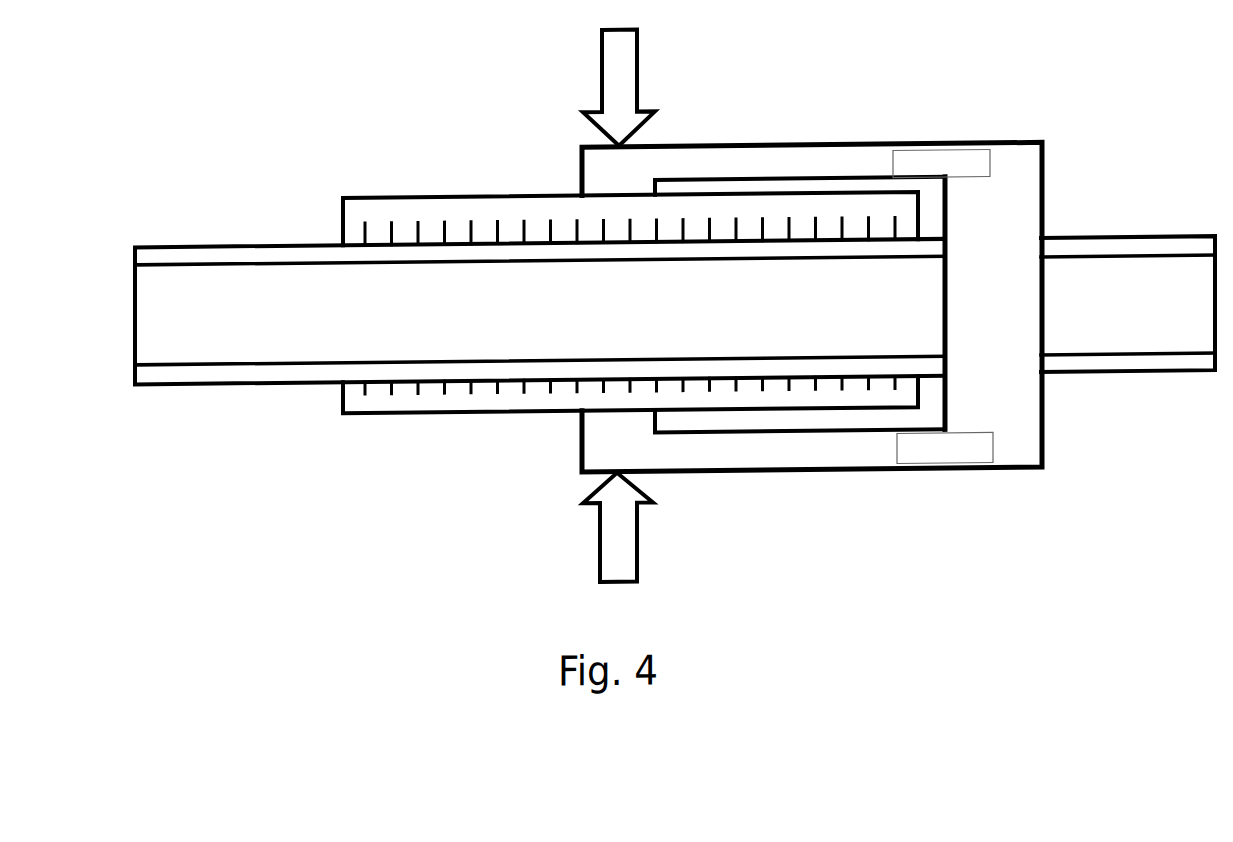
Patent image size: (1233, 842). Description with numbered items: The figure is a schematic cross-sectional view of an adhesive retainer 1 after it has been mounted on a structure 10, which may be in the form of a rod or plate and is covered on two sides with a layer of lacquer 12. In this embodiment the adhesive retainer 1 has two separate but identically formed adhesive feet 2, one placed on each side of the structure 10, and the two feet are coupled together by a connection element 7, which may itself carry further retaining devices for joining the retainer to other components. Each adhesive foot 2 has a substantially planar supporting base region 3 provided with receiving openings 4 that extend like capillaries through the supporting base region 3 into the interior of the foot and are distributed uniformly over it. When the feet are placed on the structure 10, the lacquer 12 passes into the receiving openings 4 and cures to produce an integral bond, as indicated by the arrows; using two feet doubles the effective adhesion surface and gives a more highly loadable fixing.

The adhesive retainer 1 is at (571, 131).
The adhesive foot 2 is at (437, 195).
The supporting base region 3 is at (353, 225).
The receiving openings 4 is at (392, 225).
The connection element 7 is at (990, 187).
The structure 10 is at (172, 300).
The layer of lacquer 12 is at (217, 253).